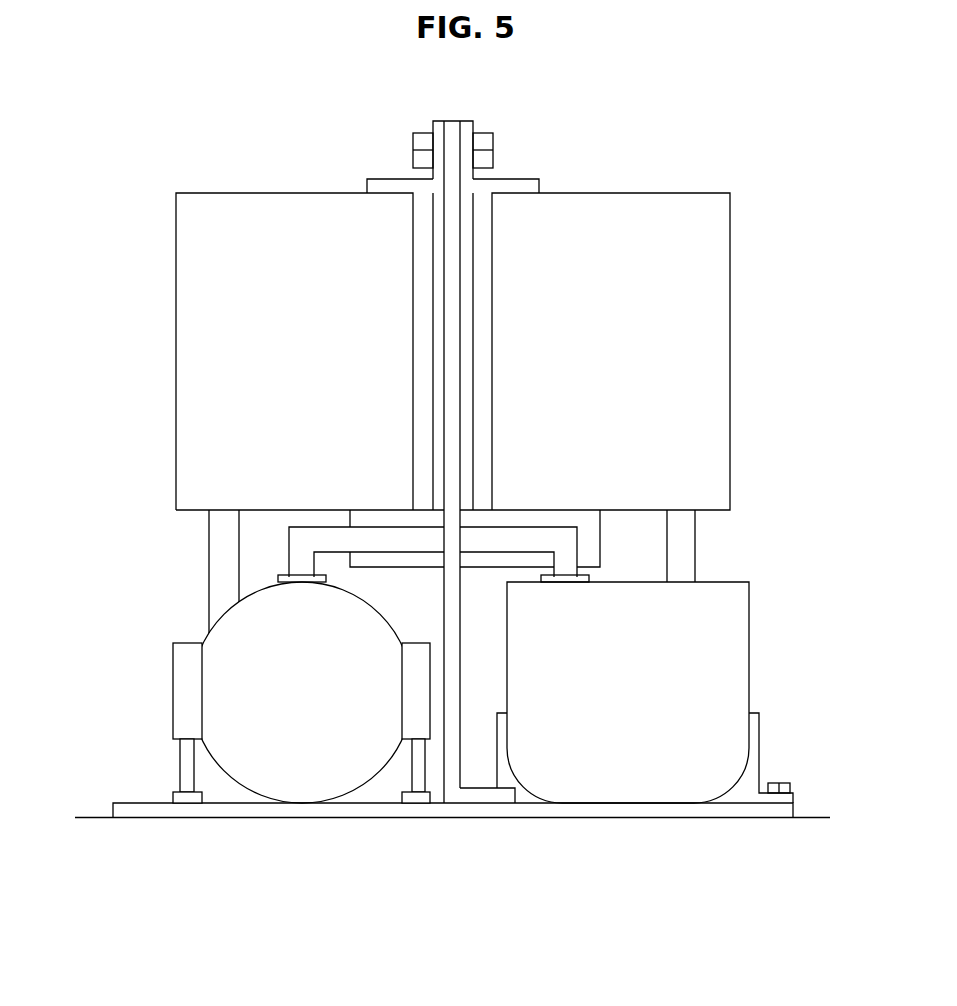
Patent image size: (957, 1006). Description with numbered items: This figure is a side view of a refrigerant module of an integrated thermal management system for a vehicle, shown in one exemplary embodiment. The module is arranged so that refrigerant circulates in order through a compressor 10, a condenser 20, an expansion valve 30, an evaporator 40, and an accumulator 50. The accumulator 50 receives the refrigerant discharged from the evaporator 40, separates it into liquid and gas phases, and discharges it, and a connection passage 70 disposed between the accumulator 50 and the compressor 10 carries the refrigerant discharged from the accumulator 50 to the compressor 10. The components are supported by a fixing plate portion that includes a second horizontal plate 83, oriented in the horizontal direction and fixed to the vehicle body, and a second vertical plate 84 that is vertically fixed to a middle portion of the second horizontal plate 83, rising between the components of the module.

The compressor 10 is at (265, 767).
The condenser 20 is at (284, 206).
The expansion valve 30 is at (553, 518).
The evaporator 40 is at (646, 205).
The accumulator 50 is at (652, 767).
The connection passage 70 is at (565, 552).
The second horizontal plate 83 is at (367, 812).
The second vertical plate 84 is at (453, 681).